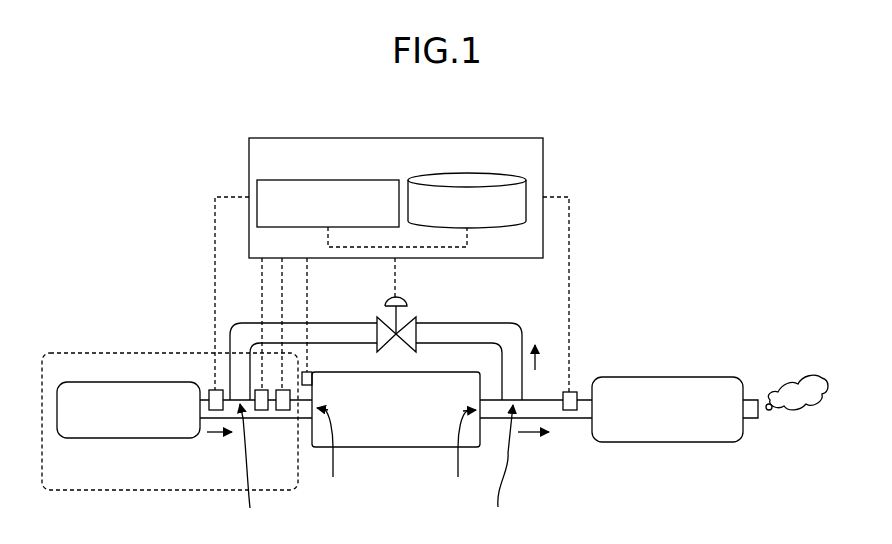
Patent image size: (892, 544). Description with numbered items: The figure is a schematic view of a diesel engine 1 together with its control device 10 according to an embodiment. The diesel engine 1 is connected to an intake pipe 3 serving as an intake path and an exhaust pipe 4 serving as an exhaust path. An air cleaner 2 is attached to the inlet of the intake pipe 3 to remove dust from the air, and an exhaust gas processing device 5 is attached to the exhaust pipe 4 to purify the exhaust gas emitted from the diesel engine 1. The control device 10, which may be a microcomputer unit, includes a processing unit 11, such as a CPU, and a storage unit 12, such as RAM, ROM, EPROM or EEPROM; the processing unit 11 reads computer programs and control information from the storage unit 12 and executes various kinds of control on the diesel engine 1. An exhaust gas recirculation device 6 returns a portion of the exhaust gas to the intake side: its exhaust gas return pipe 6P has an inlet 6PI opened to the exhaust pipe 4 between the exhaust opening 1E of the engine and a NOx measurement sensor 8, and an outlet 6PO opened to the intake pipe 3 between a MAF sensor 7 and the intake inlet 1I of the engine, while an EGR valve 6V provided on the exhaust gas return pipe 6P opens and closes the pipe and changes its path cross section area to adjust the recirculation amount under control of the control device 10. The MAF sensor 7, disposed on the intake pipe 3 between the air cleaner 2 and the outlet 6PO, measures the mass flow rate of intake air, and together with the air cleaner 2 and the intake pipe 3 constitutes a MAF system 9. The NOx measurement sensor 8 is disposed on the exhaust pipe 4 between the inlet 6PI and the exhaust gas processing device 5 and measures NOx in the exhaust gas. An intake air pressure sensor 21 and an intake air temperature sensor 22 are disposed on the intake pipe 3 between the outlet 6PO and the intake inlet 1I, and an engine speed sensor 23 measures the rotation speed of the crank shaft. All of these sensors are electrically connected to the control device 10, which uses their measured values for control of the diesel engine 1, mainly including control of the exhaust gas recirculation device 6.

The diesel engine 1 is at (445, 372).
The intake inlet 1I is at (330, 454).
The exhaust opening 1E is at (461, 455).
The air cleaner 2 is at (164, 382).
The intake pipe 3 is at (305, 420).
The exhaust pipe 4 is at (581, 420).
The exhaust gas processing device 5 is at (700, 377).
The exhaust gas recirculation (EGR) device 6 is at (446, 326).
The EGR valve 6V is at (416, 319).
The exhaust gas return pipe 6P is at (517, 323).
The outlet 6PO is at (252, 467).
The inlet 6PI is at (498, 467).
The MAF sensor 7 is at (213, 390).
The NOx measurement sensor 8 is at (577, 392).
The MAF system 9 is at (105, 353).
The control device 10 is at (477, 138).
The processing unit 11 is at (356, 180).
The storage unit 12 is at (481, 172).
The intake air pressure sensor 21 is at (262, 410).
The intake air temperature sensor 22 is at (284, 410).
The engine speed sensor 23 is at (307, 372).